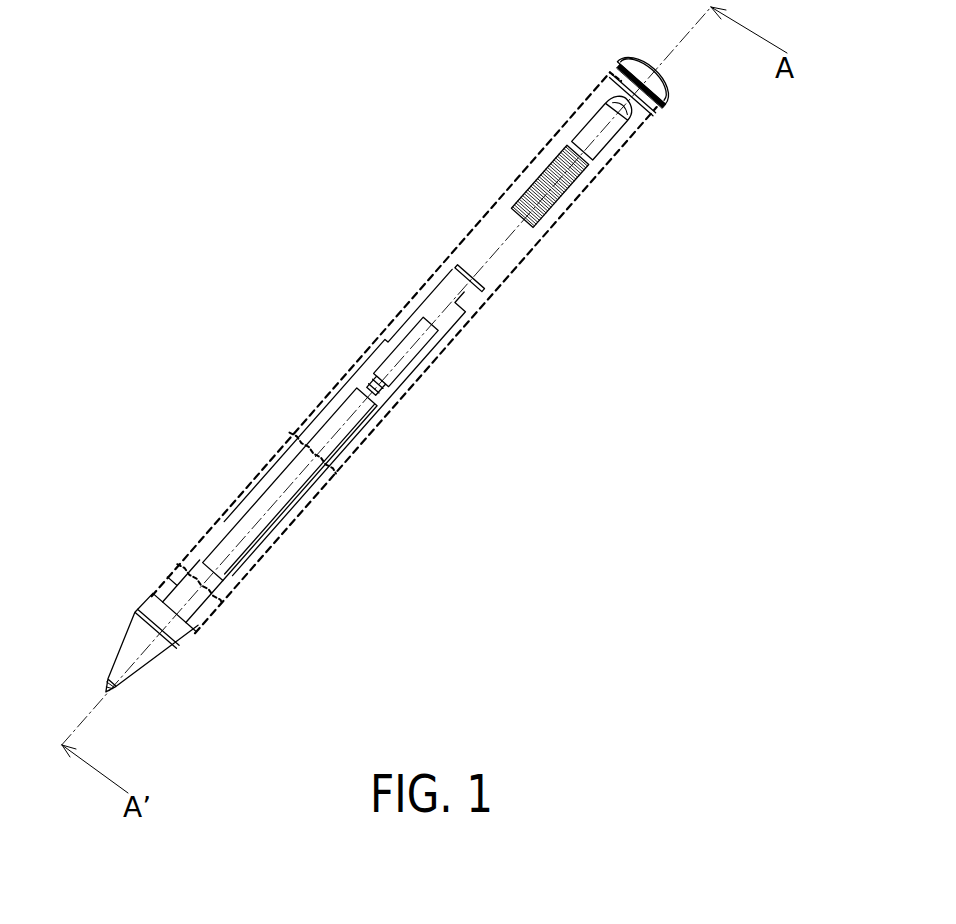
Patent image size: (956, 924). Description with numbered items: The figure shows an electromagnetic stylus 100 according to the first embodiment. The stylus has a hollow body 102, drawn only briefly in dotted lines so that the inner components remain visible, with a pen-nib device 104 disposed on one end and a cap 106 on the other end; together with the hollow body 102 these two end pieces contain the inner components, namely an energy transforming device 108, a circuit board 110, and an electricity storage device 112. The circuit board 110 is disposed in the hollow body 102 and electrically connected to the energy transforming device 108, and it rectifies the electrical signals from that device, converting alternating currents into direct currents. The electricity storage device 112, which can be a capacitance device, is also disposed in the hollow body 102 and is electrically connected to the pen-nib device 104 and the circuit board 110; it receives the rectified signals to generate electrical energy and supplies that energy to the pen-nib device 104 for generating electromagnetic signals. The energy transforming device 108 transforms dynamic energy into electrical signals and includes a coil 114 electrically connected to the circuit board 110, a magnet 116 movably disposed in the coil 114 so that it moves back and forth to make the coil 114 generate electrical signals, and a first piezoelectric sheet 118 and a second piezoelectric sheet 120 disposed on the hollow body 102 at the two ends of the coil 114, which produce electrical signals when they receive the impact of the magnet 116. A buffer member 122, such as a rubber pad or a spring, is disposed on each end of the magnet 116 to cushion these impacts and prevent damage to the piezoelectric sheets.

The electromagnetic stylus 100 is at (285, 145).
The hollow body 102 is at (437, 269).
The pen-nib device 104 is at (148, 666).
The cap 106 is at (675, 79).
The energy transforming device 108 is at (622, 180).
The circuit board 110 is at (275, 520).
The electricity storage device 112 is at (407, 368).
The coil 114 is at (550, 215).
The magnet 116 is at (606, 152).
The first piezoelectric sheet 118 is at (480, 284).
The second piezoelectric sheet 120 is at (650, 103).
The buffer member 122 is at (633, 115).